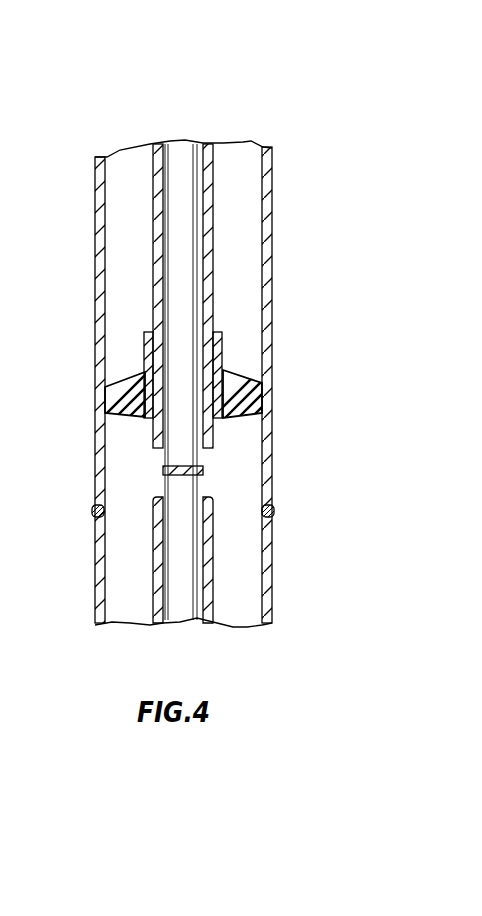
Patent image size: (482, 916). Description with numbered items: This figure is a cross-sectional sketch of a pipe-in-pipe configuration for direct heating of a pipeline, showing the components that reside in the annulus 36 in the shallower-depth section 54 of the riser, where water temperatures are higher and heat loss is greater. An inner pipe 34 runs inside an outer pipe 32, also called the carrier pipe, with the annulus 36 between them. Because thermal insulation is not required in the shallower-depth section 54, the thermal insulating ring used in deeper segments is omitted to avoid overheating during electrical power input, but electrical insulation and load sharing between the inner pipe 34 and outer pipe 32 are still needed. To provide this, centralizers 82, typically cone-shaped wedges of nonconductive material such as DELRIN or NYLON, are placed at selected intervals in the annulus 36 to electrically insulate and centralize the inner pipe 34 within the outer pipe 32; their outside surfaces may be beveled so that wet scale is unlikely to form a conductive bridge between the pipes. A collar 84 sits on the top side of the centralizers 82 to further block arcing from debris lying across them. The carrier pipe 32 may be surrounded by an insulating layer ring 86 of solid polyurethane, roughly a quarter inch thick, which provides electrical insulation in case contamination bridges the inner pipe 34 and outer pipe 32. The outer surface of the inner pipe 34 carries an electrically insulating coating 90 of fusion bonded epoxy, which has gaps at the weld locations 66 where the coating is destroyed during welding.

The shallower-depth section 54 is at (132, 88).
The inner pipe 34 is at (188, 136).
The outer pipe 32 is at (278, 180).
The insulating layer ring 86 is at (218, 267).
The collar 84 is at (228, 350).
The centralizers 82 is at (240, 398).
The weld locations 66 is at (208, 472).
The annulus 36 is at (235, 567).
The electrically insulating coating 90 is at (206, 626).